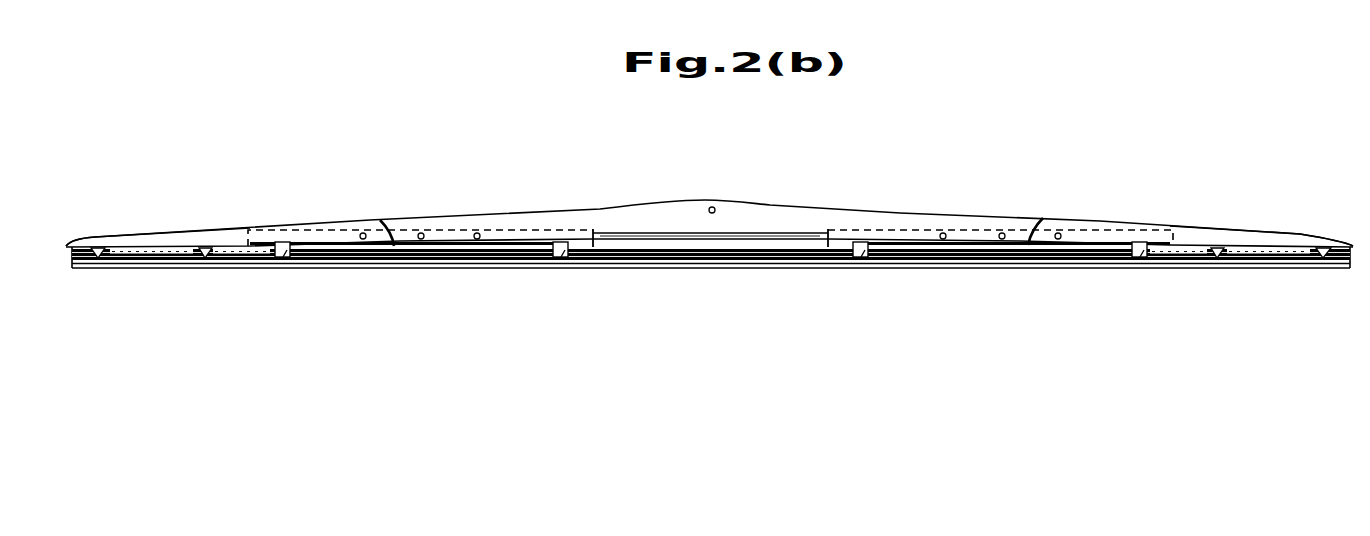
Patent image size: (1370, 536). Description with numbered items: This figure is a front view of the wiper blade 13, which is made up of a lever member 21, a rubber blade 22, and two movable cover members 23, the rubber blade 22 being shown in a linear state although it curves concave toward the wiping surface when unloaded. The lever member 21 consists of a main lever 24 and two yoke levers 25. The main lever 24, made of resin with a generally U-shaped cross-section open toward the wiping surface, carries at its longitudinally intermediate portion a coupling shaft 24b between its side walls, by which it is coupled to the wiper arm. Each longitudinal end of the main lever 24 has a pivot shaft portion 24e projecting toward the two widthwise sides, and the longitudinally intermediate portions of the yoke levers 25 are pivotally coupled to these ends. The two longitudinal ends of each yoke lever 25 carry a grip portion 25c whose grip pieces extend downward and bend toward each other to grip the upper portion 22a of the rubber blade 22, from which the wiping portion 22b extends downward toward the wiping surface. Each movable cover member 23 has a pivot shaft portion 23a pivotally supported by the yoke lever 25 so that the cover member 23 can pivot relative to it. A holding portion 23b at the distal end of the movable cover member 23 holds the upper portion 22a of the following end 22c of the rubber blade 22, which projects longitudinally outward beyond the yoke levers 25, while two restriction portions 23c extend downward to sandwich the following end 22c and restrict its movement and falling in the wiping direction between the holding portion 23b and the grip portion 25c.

The wiper blade 13 is at (833, 141).
The lever member 21 is at (763, 204).
The rubber blade 22 is at (708, 270).
The upper portion 22a is at (1188, 245).
The wiping portion 22b is at (1037, 270).
The following end 22c is at (148, 270).
The movable cover member 23 is at (148, 233).
The pivot shaft portion 23a is at (362, 232).
The holding portion 23b is at (98, 270).
The restriction portion 23c is at (206, 270).
The main lever 24 is at (856, 222).
The coupling shaft 24b is at (712, 206).
The pivot shaft portion 24e is at (420, 232).
The yoke lever 25 is at (476, 231).
The grip portion 25c is at (284, 262).